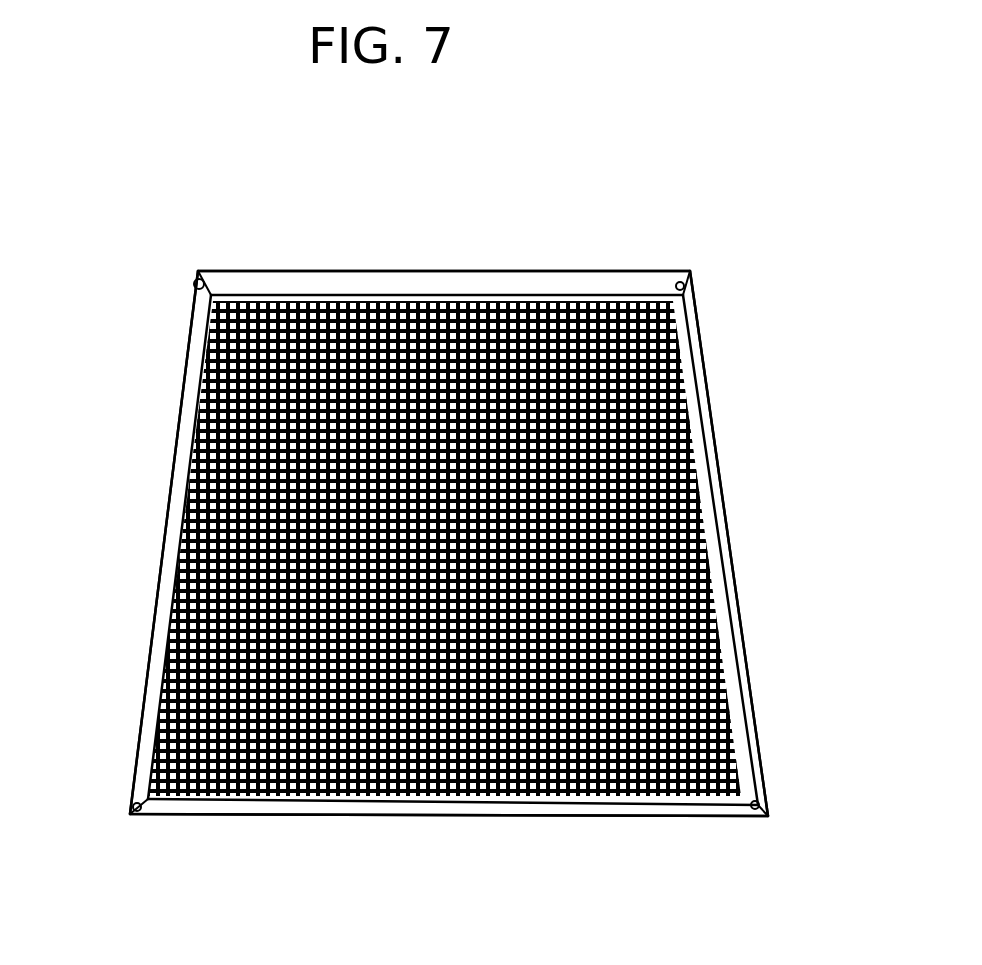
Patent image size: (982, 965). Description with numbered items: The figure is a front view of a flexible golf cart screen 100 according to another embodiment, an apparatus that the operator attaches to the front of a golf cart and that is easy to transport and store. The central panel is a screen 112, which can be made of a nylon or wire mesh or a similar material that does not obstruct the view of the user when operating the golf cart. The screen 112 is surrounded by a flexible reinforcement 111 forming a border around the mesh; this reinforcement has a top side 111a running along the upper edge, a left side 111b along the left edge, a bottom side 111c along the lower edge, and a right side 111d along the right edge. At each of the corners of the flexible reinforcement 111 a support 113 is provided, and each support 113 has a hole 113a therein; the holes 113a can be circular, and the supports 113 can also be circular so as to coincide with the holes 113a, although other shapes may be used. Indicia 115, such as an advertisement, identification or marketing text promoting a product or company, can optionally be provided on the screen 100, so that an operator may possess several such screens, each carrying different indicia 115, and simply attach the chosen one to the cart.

The golf cart screen 100 is at (548, 222).
The flexible reinforcement 111 is at (473, 552).
The top side 111a is at (242, 275).
The left side 111b is at (150, 527).
The bottom side 111c is at (455, 808).
The right side 111d is at (732, 605).
The screen 112 is at (320, 320).
The support 113 is at (190, 262).
The hole 113a is at (187, 266).
The indicia 115 is at (693, 505).